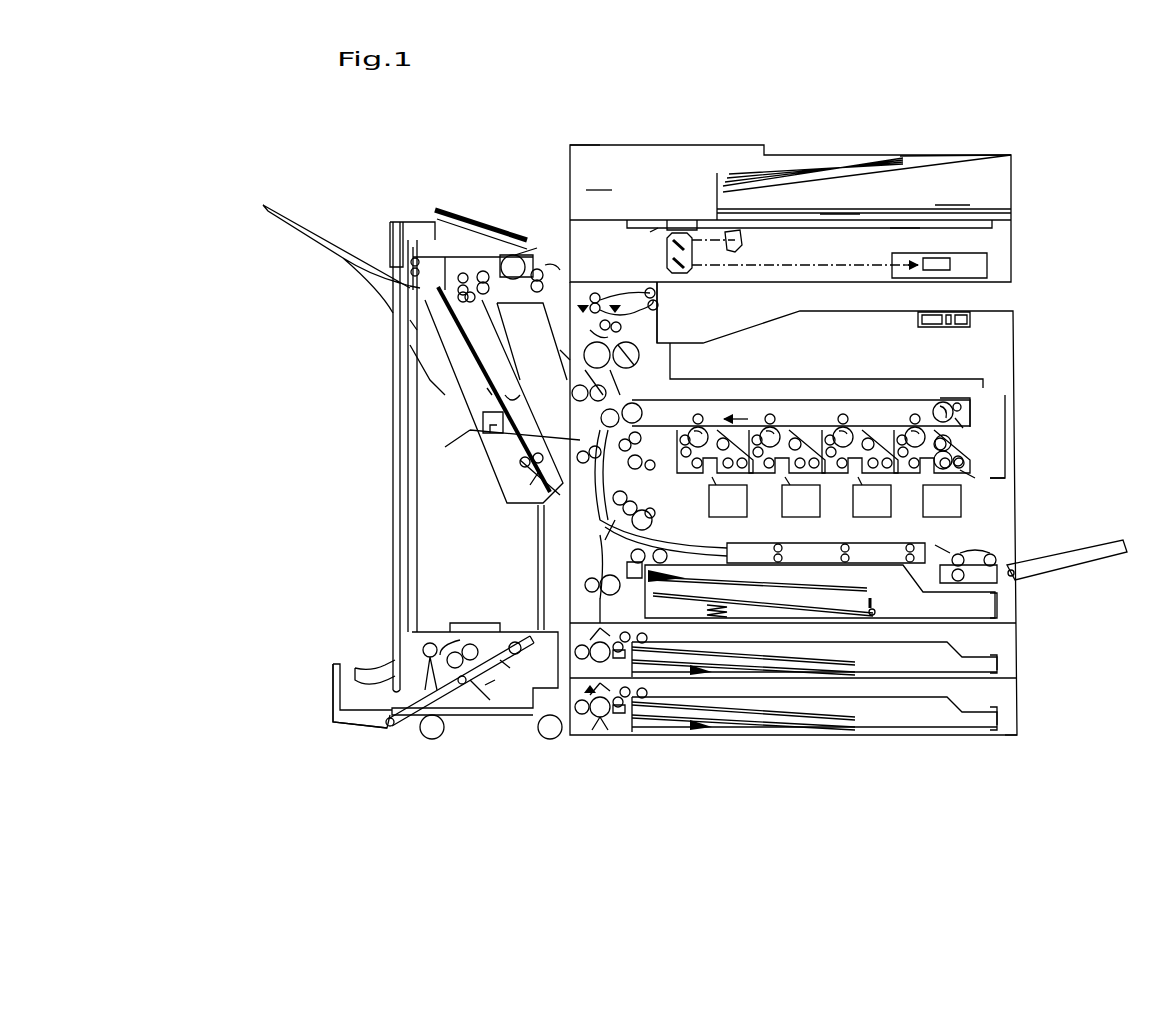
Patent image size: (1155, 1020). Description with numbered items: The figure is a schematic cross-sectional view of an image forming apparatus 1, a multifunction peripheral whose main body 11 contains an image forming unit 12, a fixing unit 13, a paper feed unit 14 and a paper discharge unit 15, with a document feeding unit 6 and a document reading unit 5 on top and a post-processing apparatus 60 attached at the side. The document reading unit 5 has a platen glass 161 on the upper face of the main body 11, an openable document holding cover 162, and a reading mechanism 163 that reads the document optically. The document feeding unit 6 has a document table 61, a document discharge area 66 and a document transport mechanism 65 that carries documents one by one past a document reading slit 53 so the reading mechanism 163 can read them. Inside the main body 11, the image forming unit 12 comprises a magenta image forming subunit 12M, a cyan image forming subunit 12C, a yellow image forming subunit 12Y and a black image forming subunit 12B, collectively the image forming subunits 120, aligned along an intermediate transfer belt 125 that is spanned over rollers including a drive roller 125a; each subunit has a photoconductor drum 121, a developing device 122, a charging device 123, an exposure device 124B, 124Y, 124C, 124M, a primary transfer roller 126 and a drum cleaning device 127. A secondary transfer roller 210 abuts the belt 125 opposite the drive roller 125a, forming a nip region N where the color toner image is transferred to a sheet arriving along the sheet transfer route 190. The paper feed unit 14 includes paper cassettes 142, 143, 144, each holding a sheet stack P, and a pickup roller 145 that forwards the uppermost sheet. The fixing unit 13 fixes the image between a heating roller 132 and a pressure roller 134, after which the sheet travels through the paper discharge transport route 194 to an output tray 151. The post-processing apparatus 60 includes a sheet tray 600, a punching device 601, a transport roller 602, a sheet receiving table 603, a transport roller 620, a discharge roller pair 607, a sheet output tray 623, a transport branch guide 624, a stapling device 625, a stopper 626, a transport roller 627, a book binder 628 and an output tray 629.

The image forming apparatus 1 is at (840, 92).
The document reading unit 5 is at (571, 142).
The document feeding unit 6 is at (888, 145).
The main body 11 is at (1018, 320).
The image forming unit 12 is at (990, 405).
The black image forming subunit 12B is at (706, 418).
The yellow image forming subunit 12Y is at (790, 375).
The cyan image forming subunit 12C is at (852, 416).
The magenta image forming subunit 12M is at (904, 388).
The image forming subunits 120 is at (806, 430).
The photoconductor drum 121 is at (951, 445).
The developing device 122 is at (952, 457).
The charging device 123 is at (912, 478).
The exposure device 124B is at (722, 517).
The exposure device 124Y is at (800, 517).
The exposure device 124C is at (875, 517).
The exposure device 124M is at (945, 517).
The intermediate transfer belt 125 is at (940, 402).
The drive roller 125a is at (640, 405).
The primary transfer roller 126 is at (953, 405).
The drum cleaning device 127 is at (953, 420).
The fixing unit 13 is at (495, 110).
The heating roller 132 is at (597, 342).
The pressure roller 134 is at (626, 342).
The paper feed unit 14 is at (1117, 658).
The paper cassette 142 is at (1000, 605).
The paper cassette 143 is at (997, 662).
The paper cassette 144 is at (997, 712).
The pickup roller 145 is at (655, 517).
The paper discharge unit 15 is at (965, 302).
The output tray 151 is at (688, 343).
The platen glass 161 is at (903, 227).
The document holding cover 162 is at (840, 216).
The reading mechanism 163 is at (660, 255).
The paper discharge transport route 194 is at (648, 288).
The sheet transfer route 190 is at (445, 447).
The secondary transfer roller 210 is at (530, 345).
The document reading slit 53 is at (676, 226).
The document table 61 is at (935, 158).
The document transport mechanism 65 is at (599, 179).
The document discharge area 66 is at (943, 204).
The post-processing apparatus 60 is at (365, 405).
The sheet tray 600 is at (432, 218).
The punching device 601 is at (494, 232).
The transport roller 602 is at (515, 253).
The sheet receiving table 603 is at (470, 398).
The discharge roller pair 607 is at (407, 280).
The transport roller 620 is at (456, 212).
The sheet output tray 623 is at (262, 213).
The transport branch guide 624 is at (417, 287).
The stapling device 625 is at (483, 427).
The stopper 626 is at (487, 390).
The transport roller 627 is at (520, 462).
The book binder 628 is at (386, 722).
The output tray 629 is at (333, 688).
The nip region N is at (479, 246).
The sheet stack P is at (866, 590).